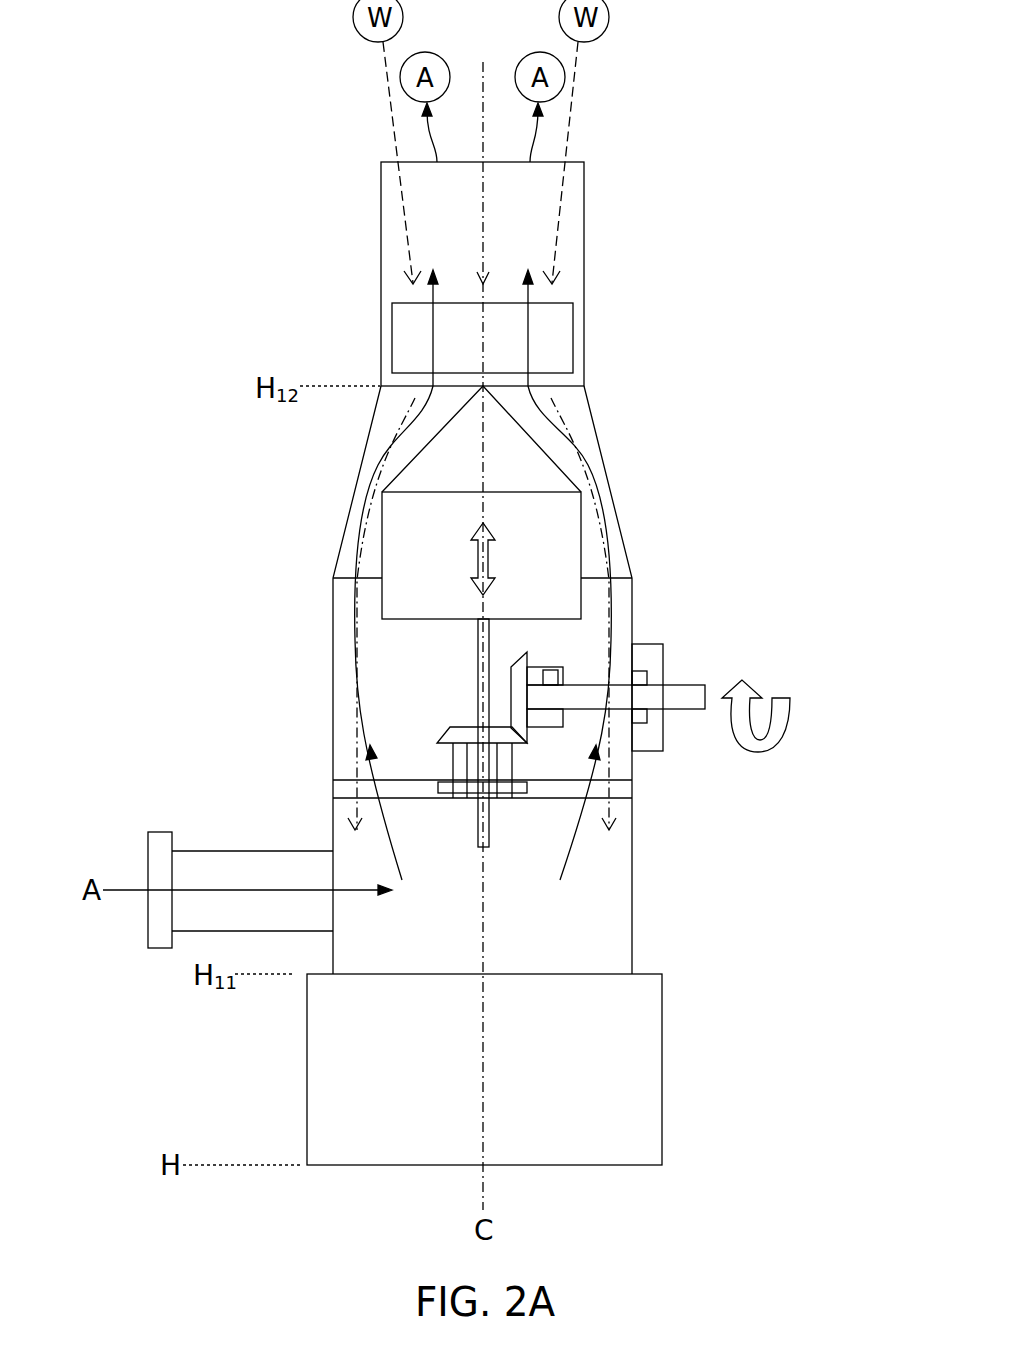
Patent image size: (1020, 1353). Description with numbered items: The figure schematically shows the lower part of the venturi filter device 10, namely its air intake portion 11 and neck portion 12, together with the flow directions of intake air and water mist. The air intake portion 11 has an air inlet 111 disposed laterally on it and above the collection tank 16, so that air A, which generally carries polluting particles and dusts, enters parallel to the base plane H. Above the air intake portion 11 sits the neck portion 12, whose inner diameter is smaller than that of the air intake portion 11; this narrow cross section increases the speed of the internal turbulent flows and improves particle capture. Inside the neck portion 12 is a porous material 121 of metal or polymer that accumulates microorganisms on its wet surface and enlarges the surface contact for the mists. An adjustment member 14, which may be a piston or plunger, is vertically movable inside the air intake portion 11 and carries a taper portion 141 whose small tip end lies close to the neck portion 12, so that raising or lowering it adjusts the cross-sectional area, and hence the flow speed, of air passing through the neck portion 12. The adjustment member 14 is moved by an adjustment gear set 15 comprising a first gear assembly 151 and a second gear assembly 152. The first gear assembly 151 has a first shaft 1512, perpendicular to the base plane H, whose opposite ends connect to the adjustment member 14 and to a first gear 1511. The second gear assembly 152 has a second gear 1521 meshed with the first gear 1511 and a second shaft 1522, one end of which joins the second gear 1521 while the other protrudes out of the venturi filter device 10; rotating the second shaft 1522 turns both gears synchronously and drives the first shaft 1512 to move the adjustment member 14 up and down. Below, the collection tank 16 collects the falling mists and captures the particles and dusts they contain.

The venturi filter device 10 is at (312, 508).
The air intake portion 11 is at (333, 746).
The air inlet 111 is at (158, 902).
The neck portion 12 is at (475, 274).
The porous material 121 is at (560, 337).
The adjustment member 14 is at (531, 502).
The taper portion 141 is at (515, 442).
The adjustment gear set 15 is at (589, 743).
The first gear assembly 151 is at (457, 753).
The first gear 1511 is at (445, 740).
The first shaft 1512 is at (485, 662).
The second gear assembly 152 is at (610, 732).
The second gear 1521 is at (515, 665).
The second shaft 1522 is at (680, 705).
The collection tank 16 is at (640, 1058).